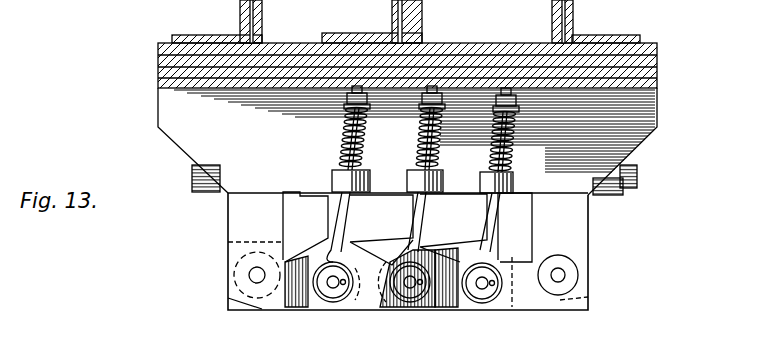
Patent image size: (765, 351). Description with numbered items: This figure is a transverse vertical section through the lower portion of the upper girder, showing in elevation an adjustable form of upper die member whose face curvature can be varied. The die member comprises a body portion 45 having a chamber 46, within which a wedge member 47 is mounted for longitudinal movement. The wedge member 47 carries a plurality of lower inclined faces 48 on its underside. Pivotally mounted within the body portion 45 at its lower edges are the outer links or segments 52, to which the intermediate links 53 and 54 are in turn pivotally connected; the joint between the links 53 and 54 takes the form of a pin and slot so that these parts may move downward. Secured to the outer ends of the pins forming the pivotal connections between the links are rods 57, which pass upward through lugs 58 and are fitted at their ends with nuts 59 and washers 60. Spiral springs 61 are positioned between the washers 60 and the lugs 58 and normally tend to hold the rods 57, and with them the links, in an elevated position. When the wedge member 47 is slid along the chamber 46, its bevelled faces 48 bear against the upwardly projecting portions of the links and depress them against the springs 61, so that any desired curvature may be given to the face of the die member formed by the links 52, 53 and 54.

The body portion 45 is at (407, 141).
The chamber 46 is at (300, 218).
The wedge member 47 is at (520, 207).
The lower inclined faces 48 is at (390, 262).
The outer links or segments 52 is at (300, 307).
The intermediate link 53 is at (371, 307).
The intermediate link 54 is at (443, 307).
The rods 57 is at (343, 208).
The lugs 58 is at (490, 182).
The nuts 59 is at (514, 101).
The washers 60 is at (517, 117).
The spiral springs 61 is at (365, 140).